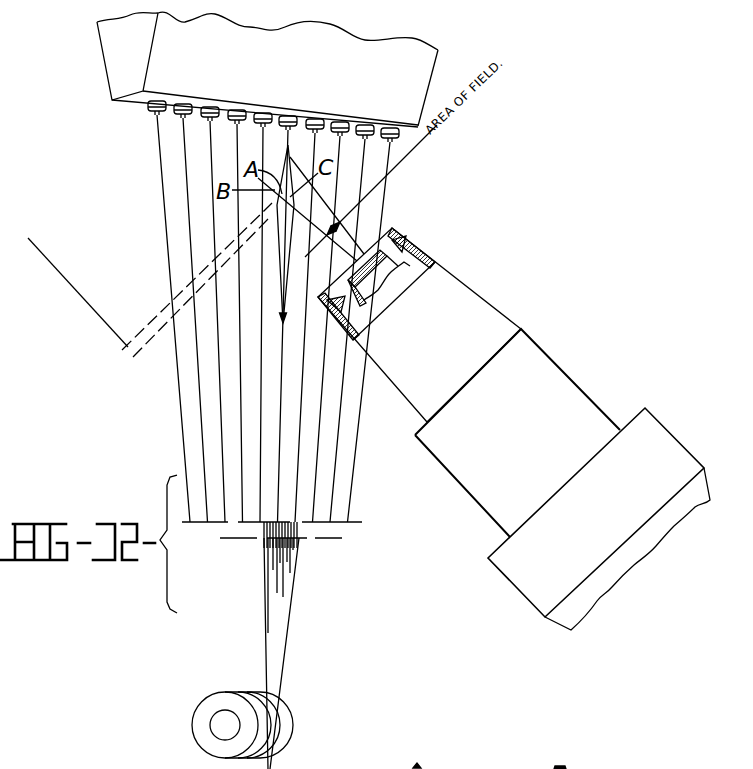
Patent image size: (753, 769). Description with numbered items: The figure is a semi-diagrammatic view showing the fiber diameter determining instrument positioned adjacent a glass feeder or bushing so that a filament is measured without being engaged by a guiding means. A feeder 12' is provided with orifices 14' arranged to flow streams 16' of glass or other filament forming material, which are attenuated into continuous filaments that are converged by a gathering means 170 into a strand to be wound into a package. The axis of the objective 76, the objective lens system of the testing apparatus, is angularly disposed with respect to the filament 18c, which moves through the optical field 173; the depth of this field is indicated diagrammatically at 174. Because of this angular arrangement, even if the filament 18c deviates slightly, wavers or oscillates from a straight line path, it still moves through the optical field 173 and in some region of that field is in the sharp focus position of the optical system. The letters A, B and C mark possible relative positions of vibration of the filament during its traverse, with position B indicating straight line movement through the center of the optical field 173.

The feeder 12' is at (298, 69).
The orifices 14' is at (244, 122).
The streams 16' is at (288, 318).
The filament 18c is at (289, 143).
The optical field 173 is at (277, 203).
The depth of the optical field 174 is at (128, 348).
The objective 76 is at (448, 272).
The gathering means 170 is at (252, 690).